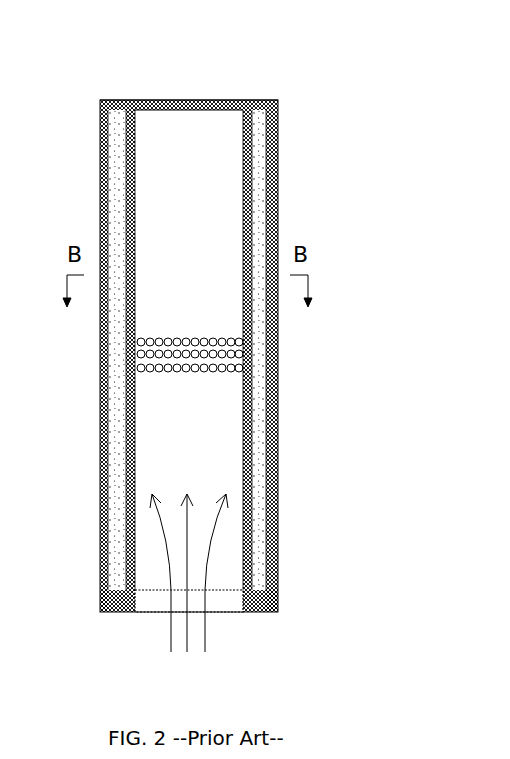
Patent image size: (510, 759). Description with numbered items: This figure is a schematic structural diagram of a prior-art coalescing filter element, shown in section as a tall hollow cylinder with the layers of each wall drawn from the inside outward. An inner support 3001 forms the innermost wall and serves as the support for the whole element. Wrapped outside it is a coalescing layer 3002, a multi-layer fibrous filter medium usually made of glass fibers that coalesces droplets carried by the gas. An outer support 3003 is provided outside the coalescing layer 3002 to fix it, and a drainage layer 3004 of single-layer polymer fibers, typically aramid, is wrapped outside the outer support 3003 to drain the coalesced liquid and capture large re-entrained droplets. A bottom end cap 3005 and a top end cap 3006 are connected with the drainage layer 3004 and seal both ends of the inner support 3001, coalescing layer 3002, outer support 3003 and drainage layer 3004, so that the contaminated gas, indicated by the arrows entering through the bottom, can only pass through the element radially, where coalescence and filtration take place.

The inner support 3001 is at (248, 452).
The coalescing layer 3002 is at (255, 417).
The outer support 3003 is at (267, 400).
The drainage layer 3004 is at (275, 372).
The bottom end cap 3005 is at (257, 612).
The top end cap 3006 is at (200, 98).